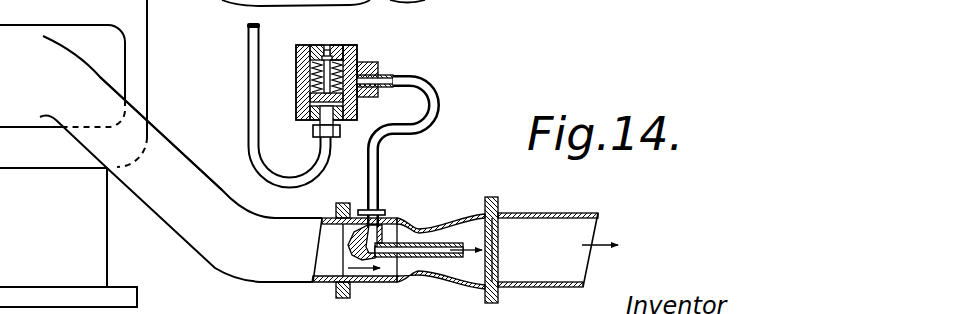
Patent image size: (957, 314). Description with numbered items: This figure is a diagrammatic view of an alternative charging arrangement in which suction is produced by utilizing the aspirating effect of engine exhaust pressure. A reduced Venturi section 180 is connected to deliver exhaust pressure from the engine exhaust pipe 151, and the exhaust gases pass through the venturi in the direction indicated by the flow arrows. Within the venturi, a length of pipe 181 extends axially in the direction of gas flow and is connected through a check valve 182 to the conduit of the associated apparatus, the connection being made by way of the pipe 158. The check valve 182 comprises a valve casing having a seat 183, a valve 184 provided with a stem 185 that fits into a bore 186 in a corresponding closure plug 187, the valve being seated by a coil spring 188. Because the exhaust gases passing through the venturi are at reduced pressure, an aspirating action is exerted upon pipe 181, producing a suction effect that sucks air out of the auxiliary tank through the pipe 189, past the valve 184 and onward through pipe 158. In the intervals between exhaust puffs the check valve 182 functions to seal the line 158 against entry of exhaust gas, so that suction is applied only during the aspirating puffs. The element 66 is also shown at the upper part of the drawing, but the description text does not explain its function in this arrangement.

The engine 66 is at (185, 11).
The engine exhaust pipe 151 is at (165, 127).
The pipe 158 is at (249, 50).
The reduced Venturi section 180 is at (440, 223).
The length of pipe 181 is at (407, 230).
The check valve 182 is at (297, 67).
The seat 183 is at (307, 121).
The valve 184 is at (357, 106).
The stem 185 is at (343, 45).
The bore 186 is at (335, 46).
The closure plug 187 is at (319, 46).
The coil spring 188 is at (318, 88).
The pipe 189 is at (427, 92).